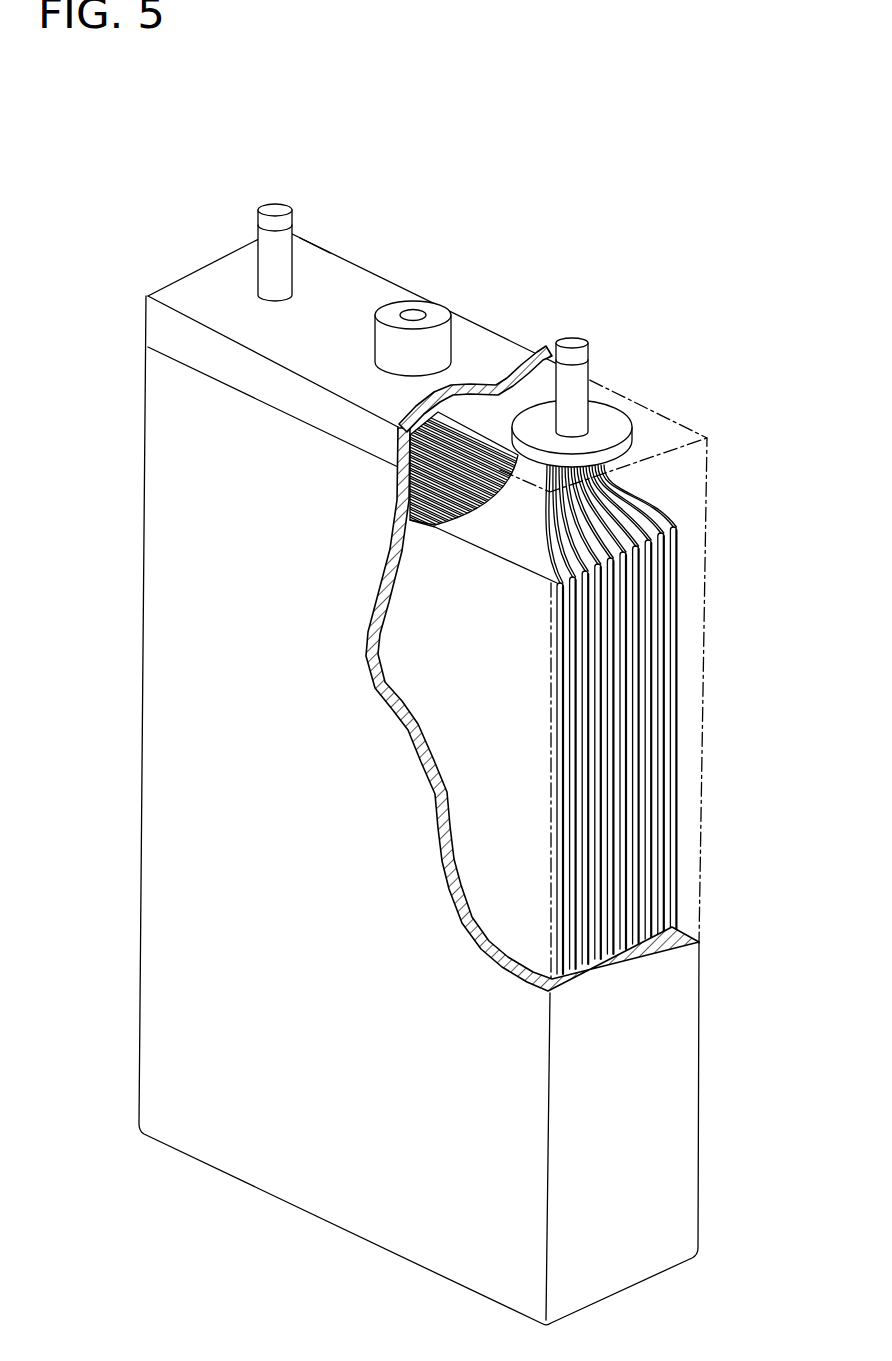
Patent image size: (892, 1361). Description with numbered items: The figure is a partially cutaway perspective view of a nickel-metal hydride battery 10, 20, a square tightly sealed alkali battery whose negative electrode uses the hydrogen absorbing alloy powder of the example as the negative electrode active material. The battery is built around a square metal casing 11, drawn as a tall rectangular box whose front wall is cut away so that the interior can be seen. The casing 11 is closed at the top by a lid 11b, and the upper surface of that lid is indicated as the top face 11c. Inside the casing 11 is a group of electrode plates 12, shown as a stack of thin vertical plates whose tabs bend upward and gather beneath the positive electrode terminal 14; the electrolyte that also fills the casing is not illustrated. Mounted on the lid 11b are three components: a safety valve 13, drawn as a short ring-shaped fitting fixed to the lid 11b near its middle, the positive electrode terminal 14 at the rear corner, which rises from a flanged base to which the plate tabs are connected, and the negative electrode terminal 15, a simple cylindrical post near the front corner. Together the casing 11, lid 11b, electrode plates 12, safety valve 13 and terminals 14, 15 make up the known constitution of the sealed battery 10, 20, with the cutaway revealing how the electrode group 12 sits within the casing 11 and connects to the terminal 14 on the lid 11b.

The nickel-metal hydride battery 10 is at (420, 727).
The battery 20 is at (567, 210).
The square metal casing 11 is at (163, 640).
The lid 11b is at (330, 273).
The top surface of lid 11c is at (362, 293).
The group of electrode plates 12 is at (668, 648).
The safety valve 13 is at (440, 318).
The positive electrode terminal 14 is at (577, 355).
The negative electrode terminal 15 is at (268, 203).